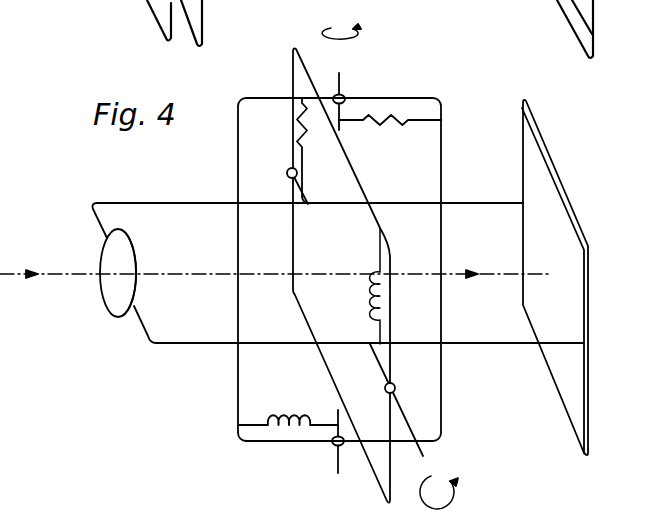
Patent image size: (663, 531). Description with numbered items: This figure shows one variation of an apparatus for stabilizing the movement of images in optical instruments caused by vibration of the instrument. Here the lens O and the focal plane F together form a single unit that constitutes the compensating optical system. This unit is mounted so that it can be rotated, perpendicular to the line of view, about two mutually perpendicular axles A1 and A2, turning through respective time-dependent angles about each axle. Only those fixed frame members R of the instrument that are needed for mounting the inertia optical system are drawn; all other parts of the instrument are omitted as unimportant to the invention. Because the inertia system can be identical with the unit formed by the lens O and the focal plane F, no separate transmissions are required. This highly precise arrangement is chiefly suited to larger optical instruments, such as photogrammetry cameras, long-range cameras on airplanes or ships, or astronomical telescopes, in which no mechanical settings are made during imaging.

The lens O is at (115, 256).
The axle A1 is at (289, 168).
The axle A2 is at (340, 278).
The frame members R is at (441, 405).
The focal plane F is at (557, 232).